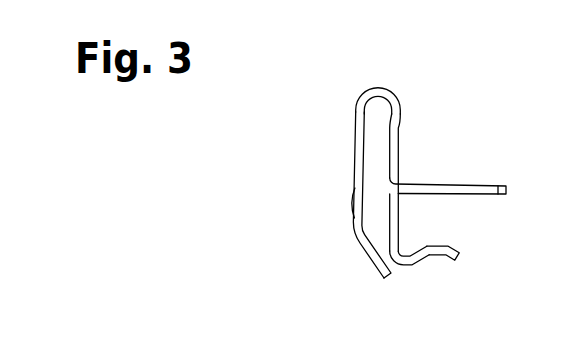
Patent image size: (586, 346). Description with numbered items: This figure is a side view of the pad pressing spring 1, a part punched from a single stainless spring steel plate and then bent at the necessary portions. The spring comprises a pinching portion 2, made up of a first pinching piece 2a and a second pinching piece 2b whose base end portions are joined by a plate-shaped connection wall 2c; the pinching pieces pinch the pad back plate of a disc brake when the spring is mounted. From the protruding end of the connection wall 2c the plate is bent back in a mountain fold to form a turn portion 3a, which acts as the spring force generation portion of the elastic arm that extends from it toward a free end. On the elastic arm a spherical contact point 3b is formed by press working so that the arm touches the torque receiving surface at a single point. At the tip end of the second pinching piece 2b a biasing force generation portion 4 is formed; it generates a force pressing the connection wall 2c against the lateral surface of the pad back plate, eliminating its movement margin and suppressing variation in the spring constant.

The pad pressing spring 1 is at (432, 108).
The pinching portion 2 is at (463, 265).
The first pinching piece 2a is at (480, 184).
The second pinching piece 2b is at (418, 259).
The connection wall 2c is at (393, 158).
The turn portion 3a is at (378, 88).
The contact point 3b is at (349, 203).
The biasing force generation portion 4 is at (459, 250).